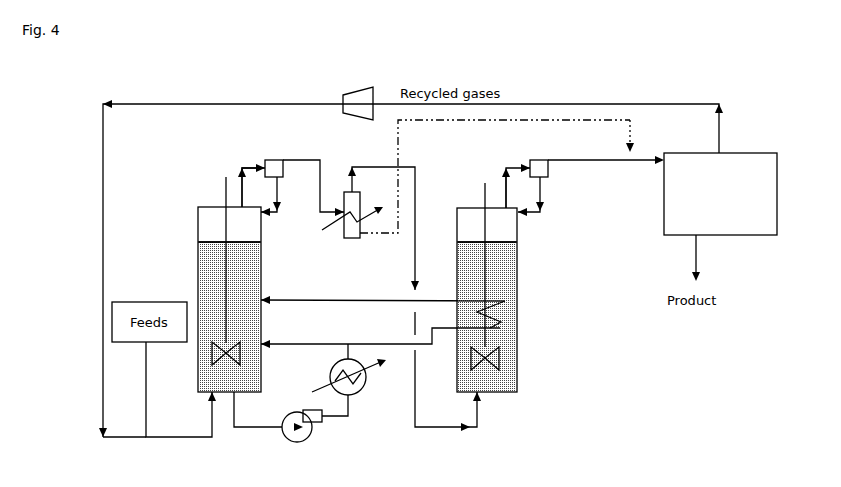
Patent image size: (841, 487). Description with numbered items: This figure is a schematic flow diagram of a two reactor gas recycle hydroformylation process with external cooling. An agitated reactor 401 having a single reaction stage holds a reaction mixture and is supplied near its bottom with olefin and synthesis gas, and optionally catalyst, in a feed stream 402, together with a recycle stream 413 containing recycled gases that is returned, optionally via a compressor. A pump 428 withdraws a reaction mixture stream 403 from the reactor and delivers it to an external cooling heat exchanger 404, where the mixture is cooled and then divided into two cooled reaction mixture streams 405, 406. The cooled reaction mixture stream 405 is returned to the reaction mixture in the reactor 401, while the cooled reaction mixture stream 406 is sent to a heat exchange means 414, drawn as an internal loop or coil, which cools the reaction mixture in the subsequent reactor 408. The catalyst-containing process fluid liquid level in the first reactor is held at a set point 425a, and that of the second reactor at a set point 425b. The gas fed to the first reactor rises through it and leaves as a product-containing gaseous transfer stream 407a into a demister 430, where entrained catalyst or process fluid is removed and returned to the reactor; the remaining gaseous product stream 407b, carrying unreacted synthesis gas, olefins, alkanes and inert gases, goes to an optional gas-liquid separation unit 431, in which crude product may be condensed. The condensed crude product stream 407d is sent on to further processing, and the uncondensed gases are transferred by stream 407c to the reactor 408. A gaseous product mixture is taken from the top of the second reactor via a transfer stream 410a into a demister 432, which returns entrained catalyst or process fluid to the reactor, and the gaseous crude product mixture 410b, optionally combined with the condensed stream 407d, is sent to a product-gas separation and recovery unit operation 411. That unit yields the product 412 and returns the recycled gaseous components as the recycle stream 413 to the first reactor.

The agitated reactor 401 is at (207, 284).
The feed stream 402 is at (159, 389).
The reaction mixture stream 403 is at (258, 423).
The external cooling heat exchanger 404 is at (350, 380).
The cooled reaction mixture stream 405 is at (304, 338).
The cooled reaction mixture stream 406 is at (424, 336).
The transfer stream 407a is at (233, 168).
The gaseous product stream 407b is at (307, 156).
The uncondensed gases stream 407c is at (414, 290).
The condensed crude product stream 407d is at (600, 120).
The reactor 408 is at (474, 287).
The transfer stream 410a is at (502, 167).
The gaseous crude product mixture 410b is at (587, 158).
The product-gas separation and recovery unit operation 411 is at (735, 194).
The product 412 is at (709, 258).
The recycle stream 413 is at (410, 268).
The heat exchange means 414 is at (505, 305).
The liquid level set point 425a is at (198, 242).
The liquid level set point 425b is at (518, 242).
The pump 428 is at (308, 437).
The demister 430 is at (261, 180).
The gas-liquid separation unit 431 is at (352, 227).
The demister 432 is at (527, 180).